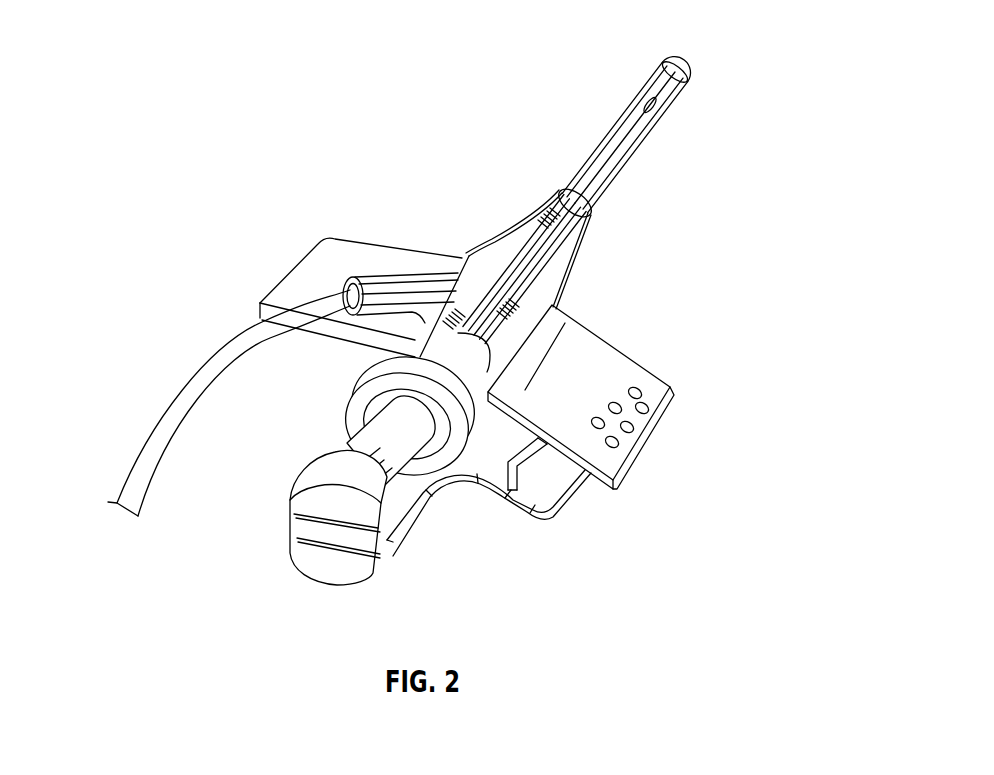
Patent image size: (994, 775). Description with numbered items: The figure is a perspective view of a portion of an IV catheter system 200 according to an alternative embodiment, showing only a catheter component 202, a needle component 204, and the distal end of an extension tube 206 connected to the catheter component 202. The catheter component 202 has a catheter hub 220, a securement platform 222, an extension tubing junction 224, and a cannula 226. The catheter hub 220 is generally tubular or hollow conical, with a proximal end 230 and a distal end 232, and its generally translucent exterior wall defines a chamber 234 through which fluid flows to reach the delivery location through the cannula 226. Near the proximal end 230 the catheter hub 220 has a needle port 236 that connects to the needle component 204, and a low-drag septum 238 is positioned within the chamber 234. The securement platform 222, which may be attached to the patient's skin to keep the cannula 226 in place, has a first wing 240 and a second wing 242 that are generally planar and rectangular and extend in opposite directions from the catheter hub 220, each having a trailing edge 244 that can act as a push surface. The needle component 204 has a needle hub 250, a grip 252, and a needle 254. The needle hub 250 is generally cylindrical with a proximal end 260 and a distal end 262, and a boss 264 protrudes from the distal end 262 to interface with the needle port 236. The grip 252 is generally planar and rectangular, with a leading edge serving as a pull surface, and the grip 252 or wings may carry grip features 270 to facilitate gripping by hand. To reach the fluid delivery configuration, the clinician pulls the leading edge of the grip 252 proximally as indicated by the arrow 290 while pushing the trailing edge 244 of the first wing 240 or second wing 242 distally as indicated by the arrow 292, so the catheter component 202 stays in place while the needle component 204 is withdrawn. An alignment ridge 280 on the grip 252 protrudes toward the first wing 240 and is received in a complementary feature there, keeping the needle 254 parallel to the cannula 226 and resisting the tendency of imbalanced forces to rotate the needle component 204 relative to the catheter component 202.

The IV catheter system 200 is at (228, 92).
The catheter component 202 is at (373, 160).
The needle component 204 is at (285, 603).
The extension tube 206 is at (160, 427).
The catheter hub 220 is at (527, 170).
The securement platform 222 is at (672, 340).
The extension tubing junction 224 is at (430, 313).
The cannula 226 is at (666, 70).
The proximal end 230 is at (376, 279).
The distal end 232 is at (580, 218).
The chamber 234 is at (507, 240).
The needle port 236 is at (463, 437).
The septum 238 is at (483, 365).
The first wing 240 is at (675, 455).
The second wing 242 is at (238, 270).
The trailing edge 244 is at (292, 330).
The needle hub 250 is at (270, 505).
The grip 252 is at (478, 571).
The needle 254 is at (623, 143).
The proximal end 260 is at (303, 542).
The distal end 262 is at (390, 382).
The boss 264 is at (363, 447).
The grip features 270 is at (647, 410).
The alignment ridge 280 is at (523, 470).
The arrow 290 is at (730, 557).
The arrow 292 is at (800, 463).